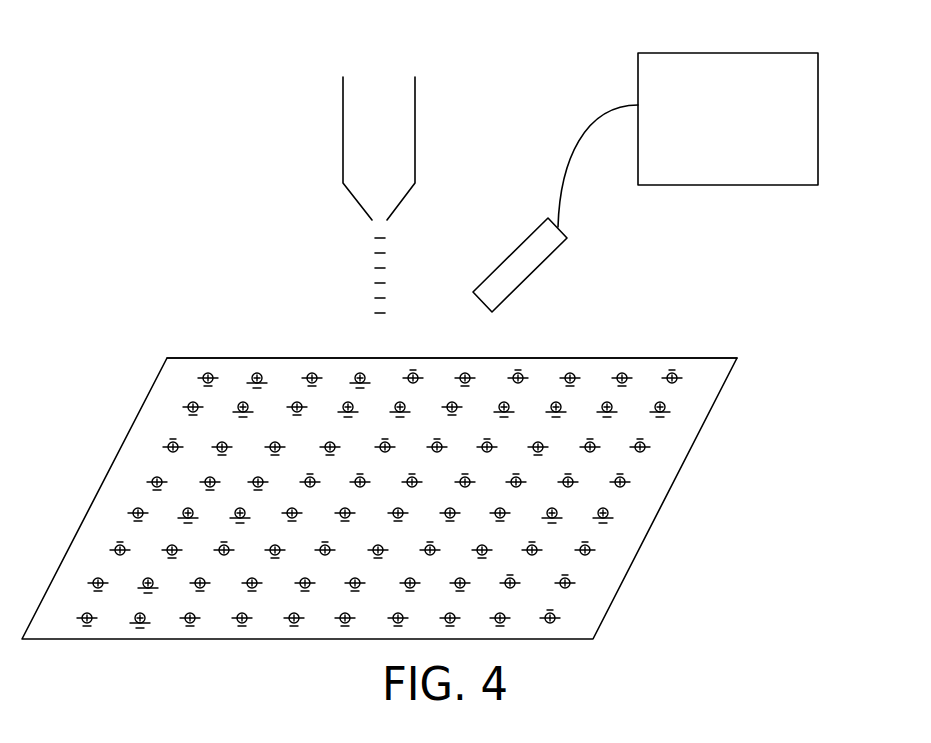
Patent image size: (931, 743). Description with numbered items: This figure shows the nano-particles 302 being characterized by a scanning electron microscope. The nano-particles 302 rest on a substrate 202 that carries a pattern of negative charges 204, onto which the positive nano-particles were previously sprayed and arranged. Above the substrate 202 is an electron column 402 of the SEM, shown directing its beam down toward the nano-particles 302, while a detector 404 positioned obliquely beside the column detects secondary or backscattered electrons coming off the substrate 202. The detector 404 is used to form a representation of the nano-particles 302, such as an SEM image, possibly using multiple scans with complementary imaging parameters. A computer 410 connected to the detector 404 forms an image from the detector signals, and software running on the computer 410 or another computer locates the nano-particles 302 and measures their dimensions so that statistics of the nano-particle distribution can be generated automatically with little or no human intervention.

The substrate 202 is at (648, 358).
The pattern of negative charges 204 is at (308, 358).
The nano-particles 302 is at (640, 452).
The electron column 402 is at (415, 100).
The detector 404 is at (543, 262).
The computer 410 is at (697, 185).